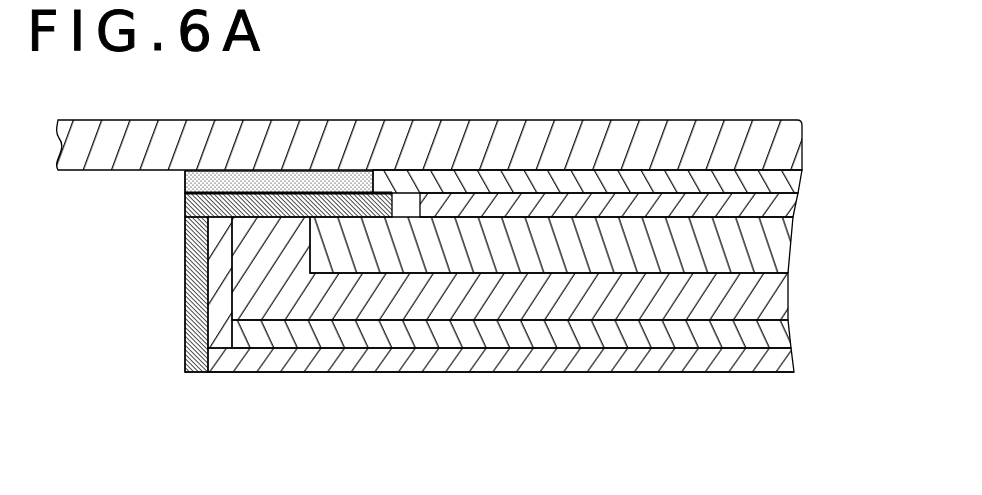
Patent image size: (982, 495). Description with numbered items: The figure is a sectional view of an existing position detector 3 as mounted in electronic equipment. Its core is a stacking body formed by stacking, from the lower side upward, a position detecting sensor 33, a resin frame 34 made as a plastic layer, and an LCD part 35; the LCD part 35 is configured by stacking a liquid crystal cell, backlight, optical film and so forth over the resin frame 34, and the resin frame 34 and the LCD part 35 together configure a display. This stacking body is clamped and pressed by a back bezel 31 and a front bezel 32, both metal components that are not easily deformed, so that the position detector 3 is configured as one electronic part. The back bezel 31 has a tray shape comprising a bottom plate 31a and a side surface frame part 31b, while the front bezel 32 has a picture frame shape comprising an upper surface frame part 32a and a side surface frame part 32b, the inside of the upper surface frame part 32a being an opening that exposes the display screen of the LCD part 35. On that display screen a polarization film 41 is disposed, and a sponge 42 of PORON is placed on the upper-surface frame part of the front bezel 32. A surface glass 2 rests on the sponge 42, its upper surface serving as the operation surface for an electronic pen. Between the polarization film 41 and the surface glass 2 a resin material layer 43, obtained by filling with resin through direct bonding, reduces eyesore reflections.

The surface glass 2 is at (454, 124).
The position detector 3 is at (172, 342).
The back bezel 31 is at (491, 352).
The bottom plate 31a is at (292, 362).
The side surface frame part 31b is at (228, 325).
The front bezel 32 is at (222, 282).
The upper surface frame part 32a is at (225, 201).
The side surface frame part 32b is at (195, 270).
The position detecting sensor 33 is at (784, 329).
The resin frame 34 is at (783, 296).
The LCD part 35 is at (783, 247).
The polarization film 41 is at (790, 205).
The sponge 42 is at (197, 181).
The resin material layer 43 is at (797, 181).